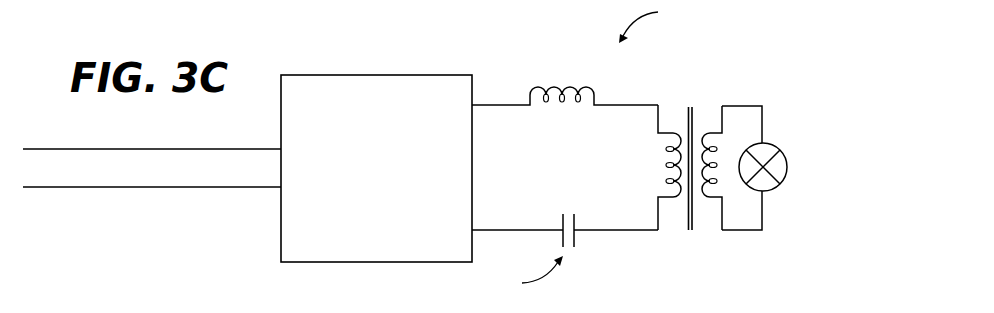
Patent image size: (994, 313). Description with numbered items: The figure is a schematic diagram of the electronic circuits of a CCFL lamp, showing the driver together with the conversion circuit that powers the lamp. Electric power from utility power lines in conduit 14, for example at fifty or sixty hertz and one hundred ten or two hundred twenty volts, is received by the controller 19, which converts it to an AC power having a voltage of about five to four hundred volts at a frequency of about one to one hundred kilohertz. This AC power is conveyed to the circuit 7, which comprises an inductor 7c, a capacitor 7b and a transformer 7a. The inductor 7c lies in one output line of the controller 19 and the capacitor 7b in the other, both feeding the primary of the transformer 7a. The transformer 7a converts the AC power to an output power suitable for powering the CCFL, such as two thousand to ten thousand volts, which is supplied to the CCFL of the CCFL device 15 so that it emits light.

The conduit 14 is at (161, 188).
The controller 19 is at (383, 72).
The circuit 7 is at (545, 48).
The inductor 7c is at (577, 88).
The capacitor 7b is at (568, 252).
The transformer 7a is at (675, 103).
The CCFL device 15 is at (773, 143).